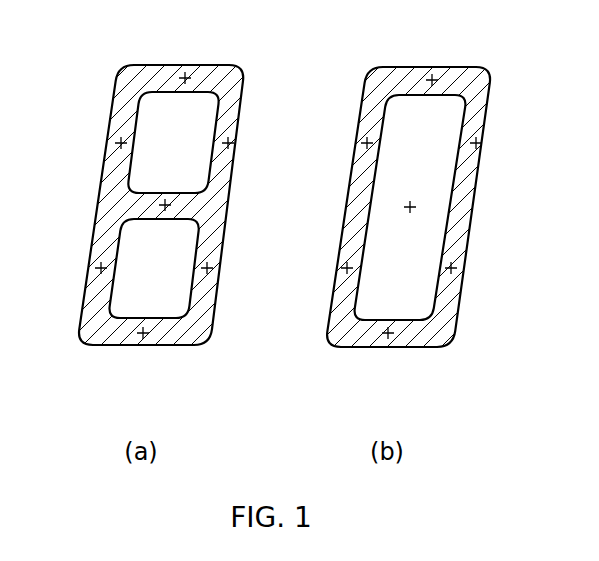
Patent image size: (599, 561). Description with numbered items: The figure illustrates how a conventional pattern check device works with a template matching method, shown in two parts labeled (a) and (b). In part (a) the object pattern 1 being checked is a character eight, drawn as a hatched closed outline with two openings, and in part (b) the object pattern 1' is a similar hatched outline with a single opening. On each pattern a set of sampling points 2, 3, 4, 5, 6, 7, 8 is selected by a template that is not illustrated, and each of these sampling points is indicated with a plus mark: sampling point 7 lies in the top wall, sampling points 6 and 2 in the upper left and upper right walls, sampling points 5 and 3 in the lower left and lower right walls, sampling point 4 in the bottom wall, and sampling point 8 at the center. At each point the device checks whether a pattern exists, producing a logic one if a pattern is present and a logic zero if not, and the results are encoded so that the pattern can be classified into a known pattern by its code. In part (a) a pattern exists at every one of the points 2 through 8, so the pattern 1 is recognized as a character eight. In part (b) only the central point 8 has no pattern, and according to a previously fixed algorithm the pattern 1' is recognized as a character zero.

The object pattern 1 is at (299, 180).
The object pattern 1' is at (299, 180).
The sampling point 2 is at (232, 144).
The sampling point 3 is at (209, 270).
The sampling point 4 is at (142, 337).
The sampling point 5 is at (99, 268).
The sampling point 6 is at (118, 142).
The sampling point 7 is at (184, 78).
The sampling point 8 is at (167, 206).